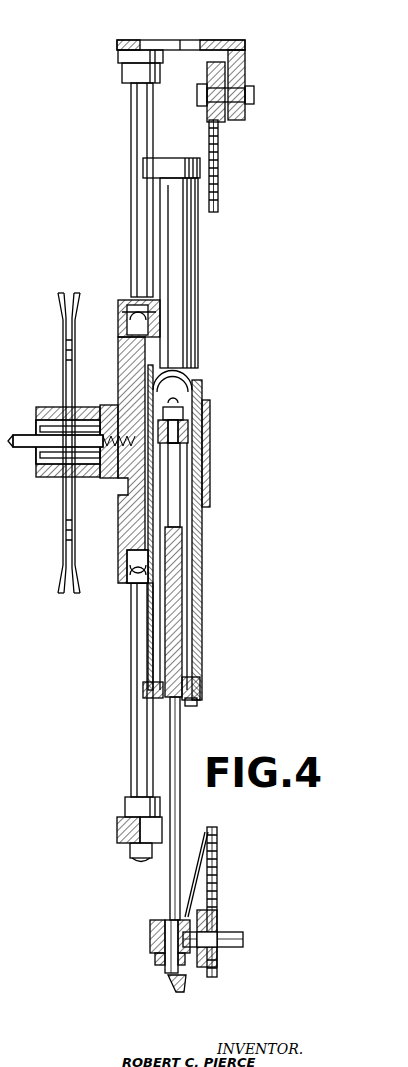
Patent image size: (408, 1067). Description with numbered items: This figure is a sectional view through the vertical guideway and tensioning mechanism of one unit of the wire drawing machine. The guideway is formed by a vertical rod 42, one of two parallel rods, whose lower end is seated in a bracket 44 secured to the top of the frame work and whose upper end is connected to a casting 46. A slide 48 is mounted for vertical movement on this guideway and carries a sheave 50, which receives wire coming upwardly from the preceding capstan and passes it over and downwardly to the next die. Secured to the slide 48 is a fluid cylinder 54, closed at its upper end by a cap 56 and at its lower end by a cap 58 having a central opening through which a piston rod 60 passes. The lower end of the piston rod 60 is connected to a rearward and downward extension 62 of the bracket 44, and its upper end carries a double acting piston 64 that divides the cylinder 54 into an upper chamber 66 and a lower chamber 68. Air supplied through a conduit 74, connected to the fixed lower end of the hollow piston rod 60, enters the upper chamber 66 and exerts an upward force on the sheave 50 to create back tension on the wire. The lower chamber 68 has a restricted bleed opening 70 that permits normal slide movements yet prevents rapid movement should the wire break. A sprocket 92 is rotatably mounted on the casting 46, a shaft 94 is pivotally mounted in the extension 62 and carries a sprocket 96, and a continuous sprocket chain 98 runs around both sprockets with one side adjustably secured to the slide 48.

The rod 42 is at (133, 130).
The bracket 44 is at (118, 840).
The casting 46 is at (216, 48).
The slide 48 is at (118, 535).
The sheave 50 is at (65, 545).
The fluid cylinder 54 is at (183, 280).
The cap 56 is at (157, 171).
The cap 58 is at (201, 690).
The piston rod 60 is at (173, 628).
The extension 62 is at (197, 833).
The double acting piston 64 is at (188, 426).
The upper chamber 66 is at (176, 383).
The lower chamber 68 is at (185, 556).
The bleed opening 70 is at (194, 702).
The conduit 74 is at (170, 986).
The sprocket 92 is at (208, 112).
The shaft 94 is at (236, 931).
The sprocket 96 is at (218, 961).
The sprocket chain 98 is at (219, 172).